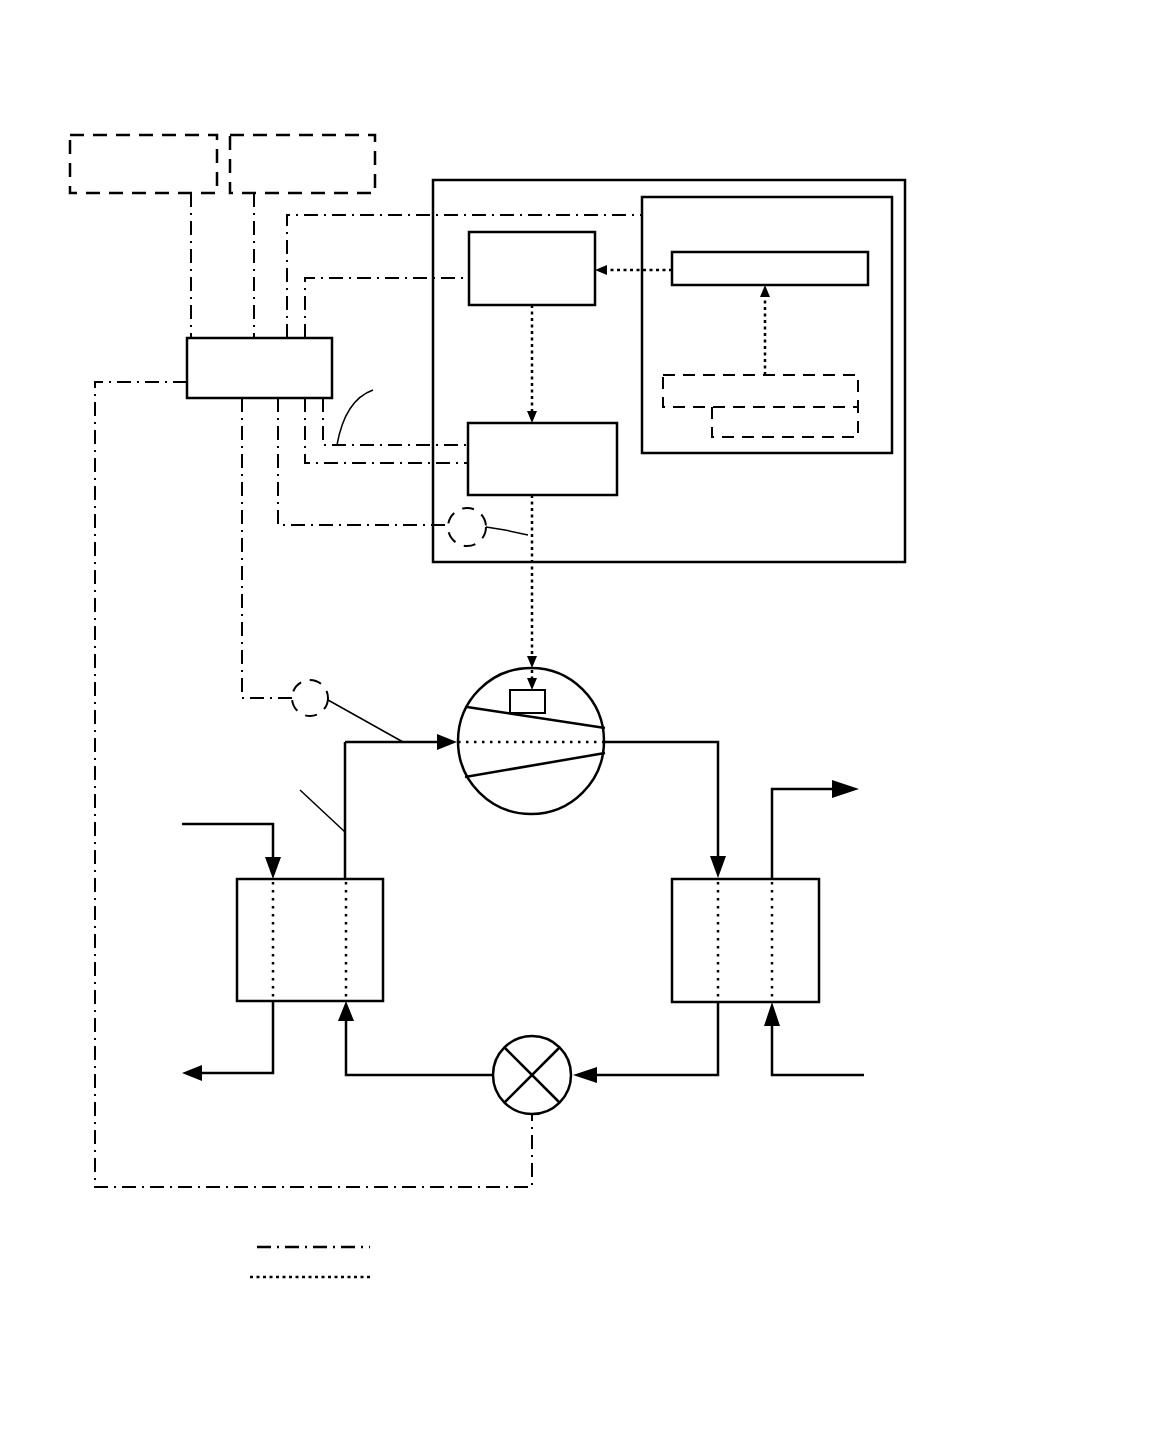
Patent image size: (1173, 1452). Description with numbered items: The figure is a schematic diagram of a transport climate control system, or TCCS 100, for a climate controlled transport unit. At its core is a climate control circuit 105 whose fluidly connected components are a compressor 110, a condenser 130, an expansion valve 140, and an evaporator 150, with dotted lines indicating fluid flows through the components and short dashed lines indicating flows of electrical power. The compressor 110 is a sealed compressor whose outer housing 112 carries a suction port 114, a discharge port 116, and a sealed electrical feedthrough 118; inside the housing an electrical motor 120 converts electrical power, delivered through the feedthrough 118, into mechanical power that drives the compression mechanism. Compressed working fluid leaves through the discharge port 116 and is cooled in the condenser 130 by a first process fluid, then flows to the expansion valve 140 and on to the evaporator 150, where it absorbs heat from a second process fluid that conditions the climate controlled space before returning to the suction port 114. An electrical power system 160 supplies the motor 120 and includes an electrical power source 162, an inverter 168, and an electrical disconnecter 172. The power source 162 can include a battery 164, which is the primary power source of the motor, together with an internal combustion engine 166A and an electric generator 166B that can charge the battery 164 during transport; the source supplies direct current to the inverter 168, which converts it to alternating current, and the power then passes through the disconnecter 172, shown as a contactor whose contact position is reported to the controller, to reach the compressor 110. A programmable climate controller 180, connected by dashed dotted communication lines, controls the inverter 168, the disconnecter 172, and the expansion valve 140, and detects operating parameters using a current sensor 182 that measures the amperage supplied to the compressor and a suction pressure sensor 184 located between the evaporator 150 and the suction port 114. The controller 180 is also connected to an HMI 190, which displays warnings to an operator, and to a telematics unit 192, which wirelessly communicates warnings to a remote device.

The TCCS 100 is at (783, 107).
The climate control circuit 105 is at (731, 1097).
The compressor 110 is at (477, 690).
The outer housing 112 is at (532, 815).
The suction port 114 is at (457, 737).
The discharge port 116 is at (607, 737).
The sealed electrical feedthrough 118 is at (538, 660).
The electrical motor 120 is at (545, 707).
The condenser 130 is at (819, 940).
The expansion valve 140 is at (549, 1110).
The evaporator 150 is at (237, 960).
The electrical power system 160 is at (852, 180).
The electrical power source 162 is at (667, 198).
The battery 164 is at (869, 267).
The internal combustion engine 166A is at (858, 428).
The electric generator 166B is at (858, 382).
The inverter 168 is at (538, 310).
The electrical disconnecter 172 is at (617, 465).
The climate controller 180 is at (187, 362).
The current sensor 182 is at (450, 517).
The suction pressure sensor 184 is at (295, 690).
The HMI 190 is at (175, 134).
The telematics unit 192 is at (255, 135).